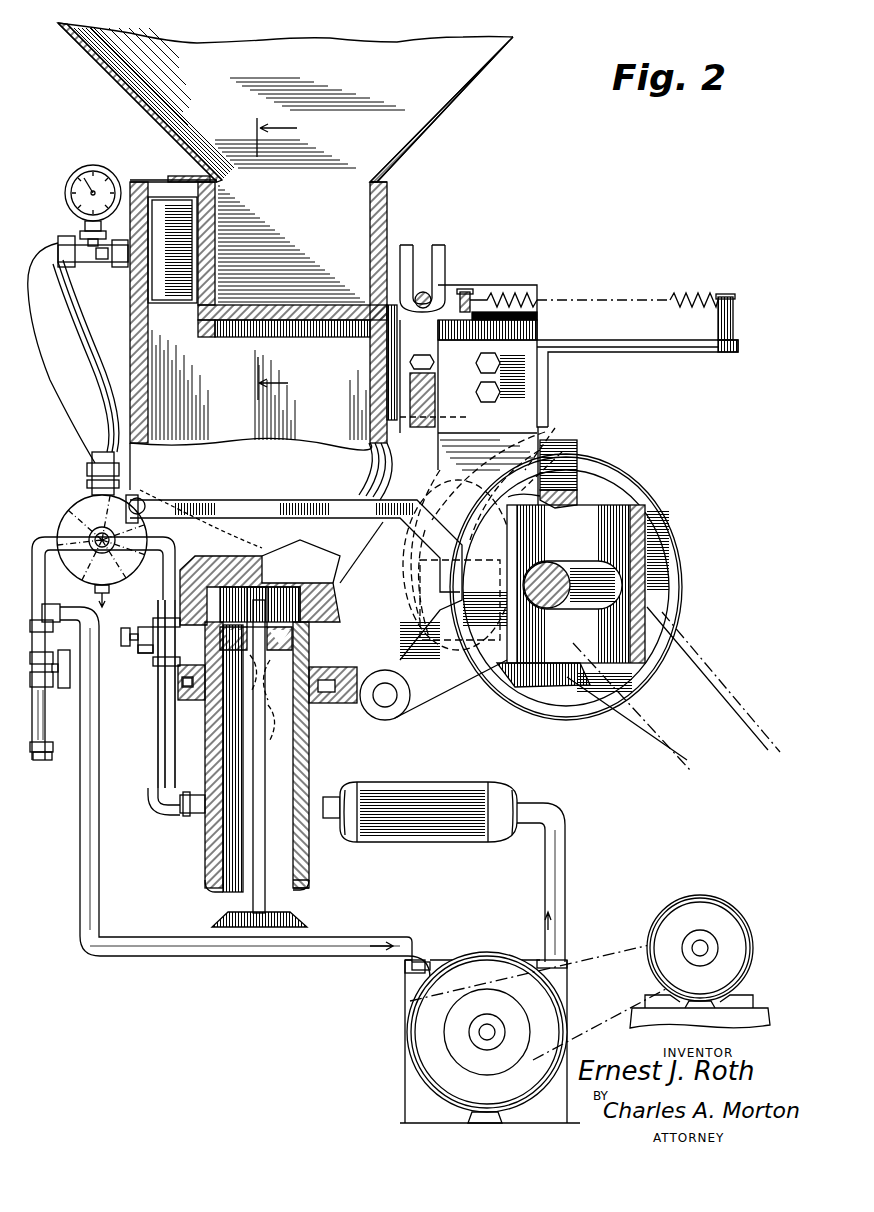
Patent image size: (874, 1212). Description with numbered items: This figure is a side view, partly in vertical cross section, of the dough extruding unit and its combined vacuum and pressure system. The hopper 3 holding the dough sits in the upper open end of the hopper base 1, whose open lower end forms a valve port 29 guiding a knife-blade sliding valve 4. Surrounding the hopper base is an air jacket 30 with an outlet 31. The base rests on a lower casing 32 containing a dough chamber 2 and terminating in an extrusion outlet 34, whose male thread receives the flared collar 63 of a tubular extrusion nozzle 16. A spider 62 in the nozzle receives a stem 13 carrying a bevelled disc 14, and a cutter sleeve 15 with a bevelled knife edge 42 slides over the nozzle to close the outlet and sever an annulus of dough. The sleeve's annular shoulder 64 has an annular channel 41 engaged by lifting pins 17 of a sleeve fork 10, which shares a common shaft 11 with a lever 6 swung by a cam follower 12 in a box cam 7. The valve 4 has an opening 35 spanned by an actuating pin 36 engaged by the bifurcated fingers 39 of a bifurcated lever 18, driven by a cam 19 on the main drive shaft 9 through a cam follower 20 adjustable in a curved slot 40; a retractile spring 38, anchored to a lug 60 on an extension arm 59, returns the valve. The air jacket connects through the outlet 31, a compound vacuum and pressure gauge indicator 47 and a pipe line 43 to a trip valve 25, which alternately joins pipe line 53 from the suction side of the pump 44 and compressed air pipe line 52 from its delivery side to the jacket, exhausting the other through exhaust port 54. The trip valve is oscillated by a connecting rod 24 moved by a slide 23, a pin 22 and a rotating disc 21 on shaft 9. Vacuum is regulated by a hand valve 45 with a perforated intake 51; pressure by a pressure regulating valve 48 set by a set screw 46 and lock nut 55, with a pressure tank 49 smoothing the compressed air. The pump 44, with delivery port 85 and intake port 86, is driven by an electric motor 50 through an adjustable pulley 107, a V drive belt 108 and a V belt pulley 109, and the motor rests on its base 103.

The hopper base 1 is at (388, 200).
The chamber 2 is at (150, 390).
The hopper 3 is at (462, 100).
The sliding valve 4 is at (307, 303).
The lever 6 is at (565, 450).
The box cam 7 is at (555, 430).
The main drive shaft 9 is at (578, 562).
The sleeve fork 10 is at (338, 705).
The common shaft 11 is at (386, 720).
The cam follower 12 is at (466, 452).
The stem 13 is at (262, 904).
The disc 14 is at (300, 920).
The cutter sleeve 15 is at (306, 888).
The tubular extrusion nozzle 16 is at (310, 856).
The lifting pins 17 is at (266, 702).
The bifurcated lever 18 is at (435, 395).
The cam 19 is at (575, 495).
The cam follower 20 is at (396, 602).
The rotating disc 21 is at (567, 680).
The pin 22 is at (560, 488).
The slide 23 is at (653, 552).
The connecting rod 24 is at (268, 500).
The trip valve 25 is at (150, 543).
The valve port 29 is at (232, 337).
The air jacket 30 is at (172, 250).
The outlet 31 is at (110, 268).
The lower casing 32 is at (375, 412).
The extrusion outlet 34 is at (302, 638).
The opening 35 is at (447, 312).
The actuating pin 36 is at (428, 296).
The retractile spring 38 is at (678, 296).
The bifurcated fingers 39 is at (436, 242).
The curved slot 40 is at (396, 563).
The annular channel 41 is at (180, 700).
The bevelled knife edge 42 is at (208, 885).
The pipe line 43 is at (78, 357).
The pump 44 is at (425, 1024).
The hand valve 45 is at (60, 655).
The set screw 46 is at (130, 634).
The compound vacuum and pressure gauge indicator 47 is at (86, 168).
The pressure regulating valve 48 is at (148, 660).
The pressure tank 49 is at (420, 812).
The electric motor 50 is at (138, 649).
The perforated intake 51 is at (75, 700).
The pipe line 52 is at (160, 604).
The pipe line 53 is at (38, 538).
The exhaust port 54 is at (110, 590).
The lock nut 55 is at (625, 480).
The extension arm 59 is at (680, 350).
The lug 60 is at (733, 326).
The spider 62 is at (298, 652).
The flared collar 63 is at (332, 592).
The annular shoulder 64 is at (187, 690).
The delivery port 85 is at (537, 962).
The intake port 86 is at (412, 967).
The motor base 103 is at (742, 1000).
The adjustable pulley 107 is at (706, 942).
The V drive belt 108 is at (610, 953).
The V belt pulley 109 is at (455, 1038).